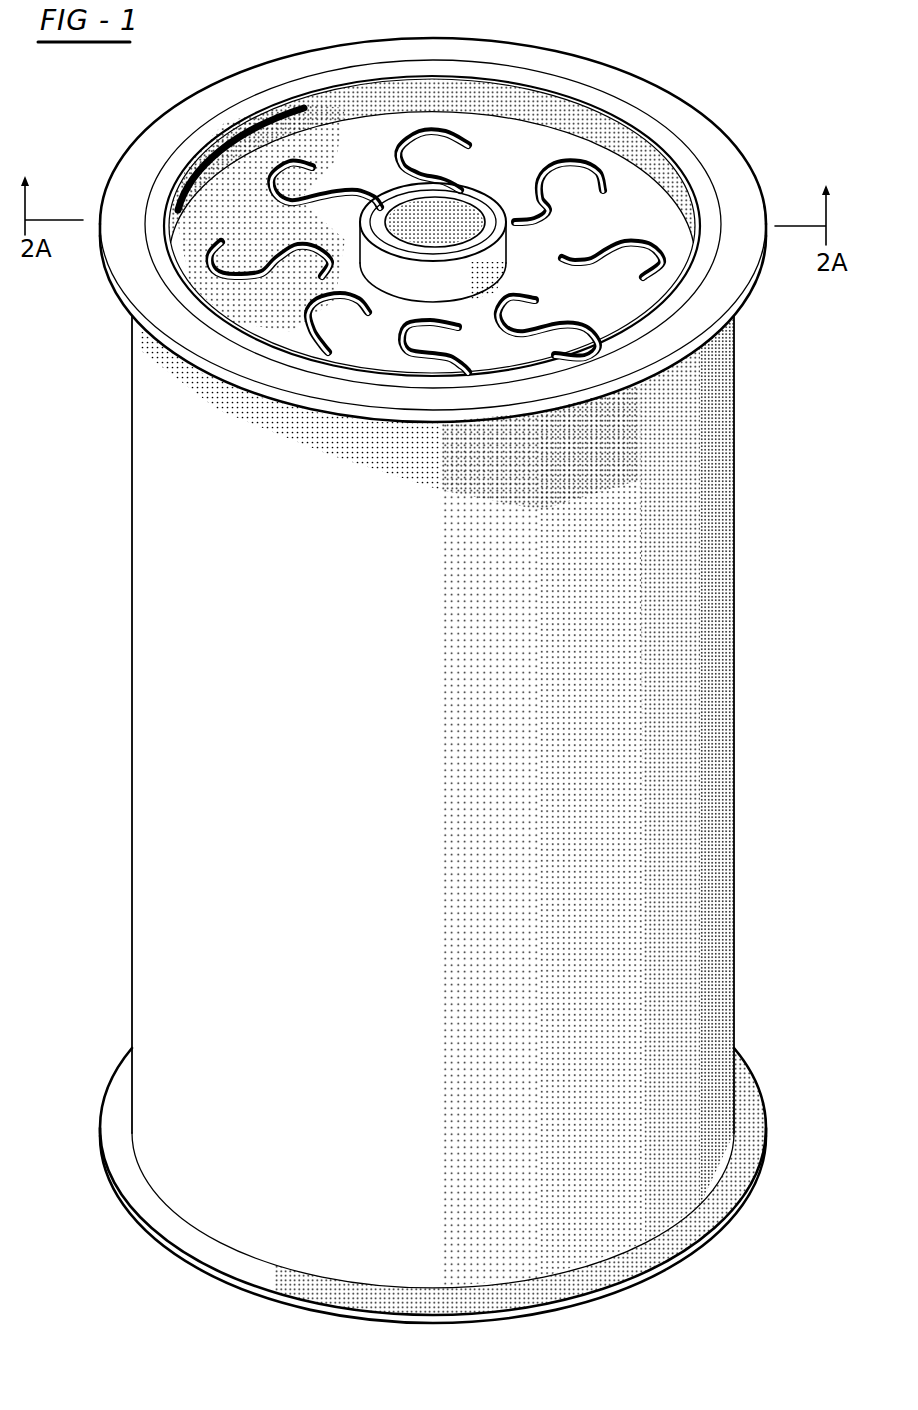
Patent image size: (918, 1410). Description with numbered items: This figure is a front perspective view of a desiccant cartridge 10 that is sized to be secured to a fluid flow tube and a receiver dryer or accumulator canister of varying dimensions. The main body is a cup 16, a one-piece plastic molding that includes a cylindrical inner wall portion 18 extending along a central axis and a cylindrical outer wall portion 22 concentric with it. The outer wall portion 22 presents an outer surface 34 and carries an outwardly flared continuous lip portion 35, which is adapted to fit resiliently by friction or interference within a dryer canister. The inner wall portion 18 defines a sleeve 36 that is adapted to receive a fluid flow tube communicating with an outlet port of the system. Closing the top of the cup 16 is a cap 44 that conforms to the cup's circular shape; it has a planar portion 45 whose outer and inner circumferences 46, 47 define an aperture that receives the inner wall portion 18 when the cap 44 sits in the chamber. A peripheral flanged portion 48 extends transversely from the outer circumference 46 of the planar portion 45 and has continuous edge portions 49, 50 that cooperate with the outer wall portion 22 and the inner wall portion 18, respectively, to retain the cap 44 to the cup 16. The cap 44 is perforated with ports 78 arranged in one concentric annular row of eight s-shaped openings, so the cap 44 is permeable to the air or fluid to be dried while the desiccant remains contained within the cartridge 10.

The desiccant cartridge 10 is at (215, 72).
The cup 16 is at (122, 858).
The cylindrical inner wall portion 18 is at (483, 195).
The cylindrical outer wall portion 22 is at (696, 728).
The outer surface 34 is at (735, 524).
The flared lip portion 35 is at (728, 180).
The sleeve 36 is at (457, 234).
The cap 44 is at (648, 200).
The planar portion 45 is at (165, 200).
The outer circumference 46 is at (620, 128).
The inner circumference 47 is at (332, 252).
The peripheral flanged portion 48 is at (237, 138).
The continuous edge portion 49 is at (175, 158).
The continuous edge portion 50 is at (385, 192).
The ports 78 is at (307, 317).